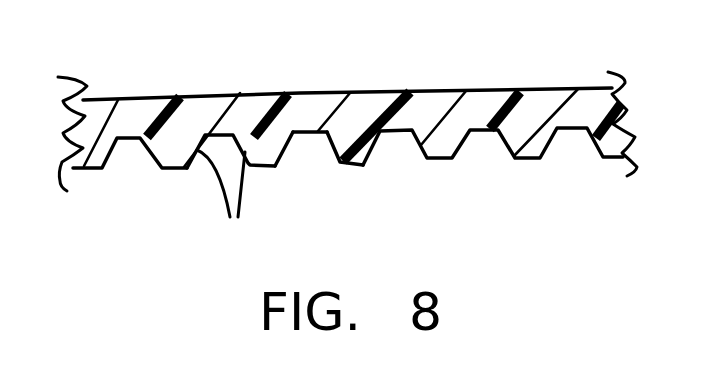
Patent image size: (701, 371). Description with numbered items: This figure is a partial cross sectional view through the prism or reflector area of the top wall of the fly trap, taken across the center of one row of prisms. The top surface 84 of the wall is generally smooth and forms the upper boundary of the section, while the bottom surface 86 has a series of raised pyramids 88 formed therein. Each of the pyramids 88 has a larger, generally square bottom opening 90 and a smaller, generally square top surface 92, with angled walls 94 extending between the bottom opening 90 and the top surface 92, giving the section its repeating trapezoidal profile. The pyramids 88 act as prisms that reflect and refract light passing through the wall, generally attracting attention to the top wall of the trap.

The top surface 84 is at (457, 88).
The bottom surface 86 is at (202, 180).
The raised pyramids 88 is at (572, 155).
The bottom opening 90 is at (341, 171).
The top surface of pyramid 92 is at (310, 133).
The angled walls 94 is at (224, 203).